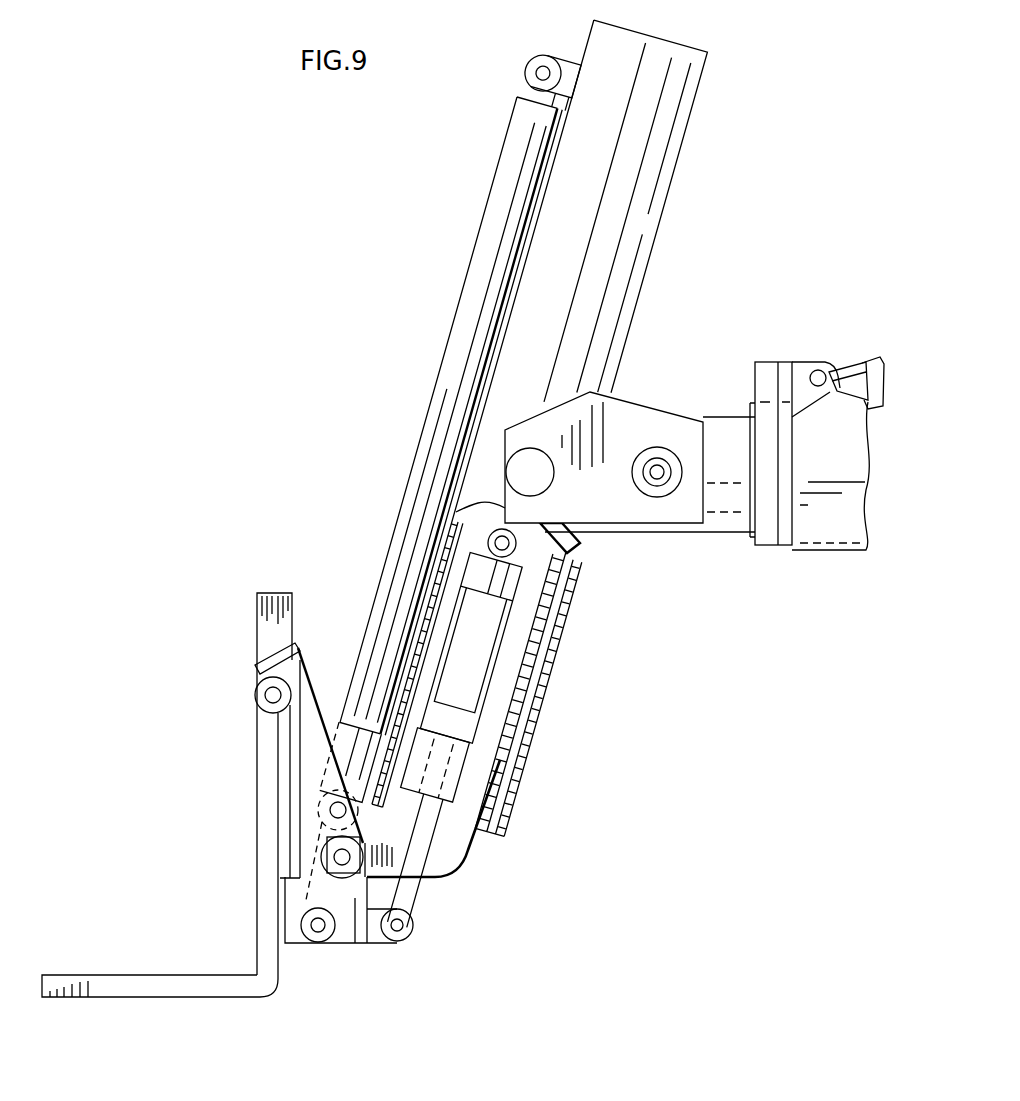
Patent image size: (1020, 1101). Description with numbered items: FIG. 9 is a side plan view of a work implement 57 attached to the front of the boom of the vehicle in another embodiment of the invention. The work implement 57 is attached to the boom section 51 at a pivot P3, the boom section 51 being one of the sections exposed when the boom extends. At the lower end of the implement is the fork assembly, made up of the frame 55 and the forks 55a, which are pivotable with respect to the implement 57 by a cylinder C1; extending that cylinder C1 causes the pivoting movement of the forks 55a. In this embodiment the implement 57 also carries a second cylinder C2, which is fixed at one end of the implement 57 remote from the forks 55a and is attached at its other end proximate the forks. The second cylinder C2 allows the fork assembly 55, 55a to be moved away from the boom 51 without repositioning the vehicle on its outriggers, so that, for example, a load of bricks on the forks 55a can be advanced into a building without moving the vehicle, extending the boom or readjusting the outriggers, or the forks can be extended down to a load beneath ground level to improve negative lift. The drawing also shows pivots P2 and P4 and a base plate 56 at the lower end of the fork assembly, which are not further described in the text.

The work implement 57 is at (641, 230).
The second cylinder C2 is at (437, 405).
The cylinder C1 is at (472, 670).
The pivot P3 is at (660, 478).
The boom section 51 is at (825, 513).
The frame 55 is at (265, 733).
The forks 55a is at (137, 987).
The base plate 56 is at (287, 950).
The pivot pin P2 is at (403, 925).
The pivot pin P4 is at (348, 877).